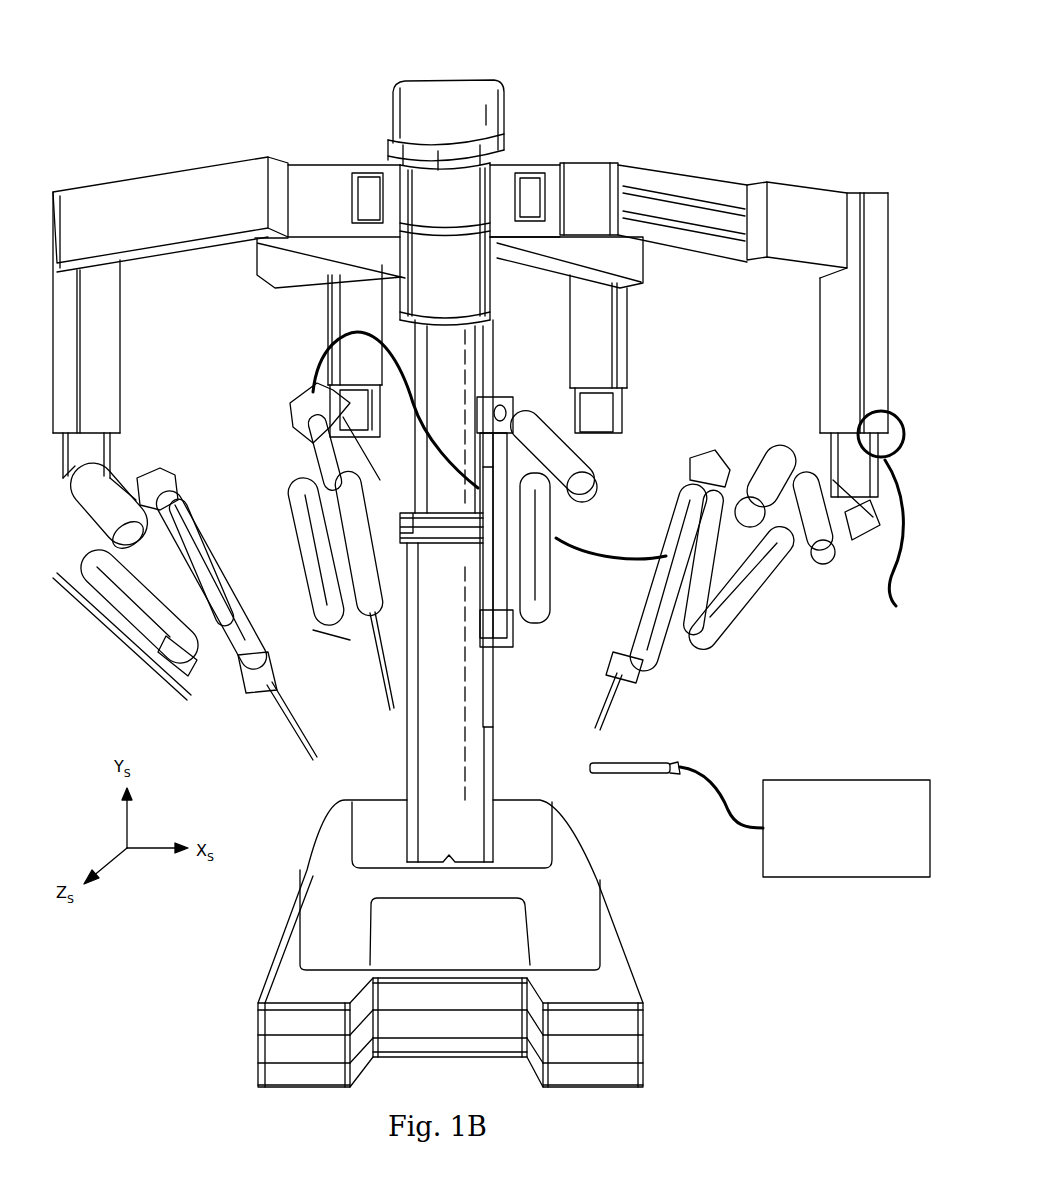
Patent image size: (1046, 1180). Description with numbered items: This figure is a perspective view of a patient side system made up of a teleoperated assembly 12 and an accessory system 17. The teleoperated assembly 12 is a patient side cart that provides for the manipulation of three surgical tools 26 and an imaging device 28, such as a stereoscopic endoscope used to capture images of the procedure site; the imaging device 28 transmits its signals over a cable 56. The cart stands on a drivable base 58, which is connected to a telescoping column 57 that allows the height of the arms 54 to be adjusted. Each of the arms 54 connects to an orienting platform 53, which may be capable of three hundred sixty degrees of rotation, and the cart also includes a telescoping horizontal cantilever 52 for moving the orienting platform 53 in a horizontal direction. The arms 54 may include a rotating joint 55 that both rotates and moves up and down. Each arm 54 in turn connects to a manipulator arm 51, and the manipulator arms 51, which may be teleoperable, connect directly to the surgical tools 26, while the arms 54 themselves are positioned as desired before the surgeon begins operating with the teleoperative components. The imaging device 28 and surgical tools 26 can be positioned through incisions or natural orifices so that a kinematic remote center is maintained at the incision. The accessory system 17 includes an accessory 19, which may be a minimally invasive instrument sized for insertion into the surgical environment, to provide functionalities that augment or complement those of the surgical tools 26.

The teleoperated assembly 12 is at (238, 74).
The accessory system 17 is at (846, 878).
The accessory 19 is at (633, 778).
The surgical tools 26 is at (220, 577).
The imaging device 28 is at (373, 673).
The manipulator arm 51 is at (110, 640).
The telescoping horizontal cantilever 52 is at (464, 74).
The orienting platform 53 is at (436, 183).
The arms 54 is at (853, 160).
The rotating joint 55 is at (880, 483).
The cable 56 is at (893, 567).
The telescoping column 57 is at (408, 758).
The drivable base 58 is at (620, 968).